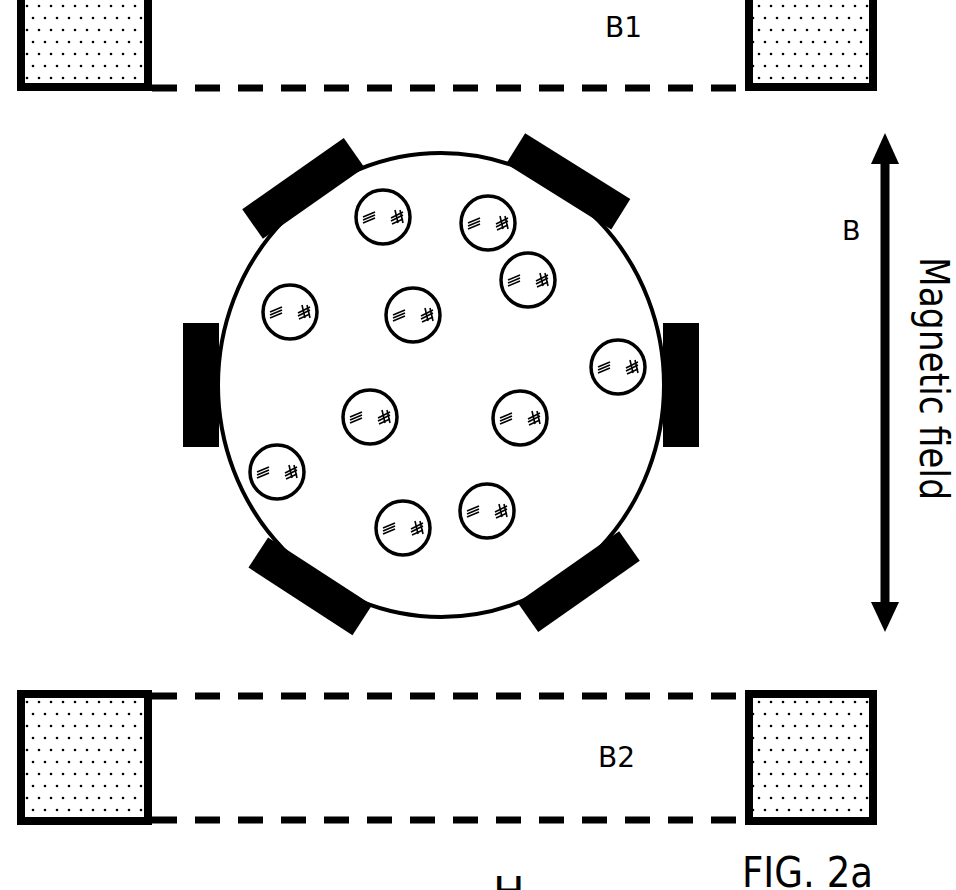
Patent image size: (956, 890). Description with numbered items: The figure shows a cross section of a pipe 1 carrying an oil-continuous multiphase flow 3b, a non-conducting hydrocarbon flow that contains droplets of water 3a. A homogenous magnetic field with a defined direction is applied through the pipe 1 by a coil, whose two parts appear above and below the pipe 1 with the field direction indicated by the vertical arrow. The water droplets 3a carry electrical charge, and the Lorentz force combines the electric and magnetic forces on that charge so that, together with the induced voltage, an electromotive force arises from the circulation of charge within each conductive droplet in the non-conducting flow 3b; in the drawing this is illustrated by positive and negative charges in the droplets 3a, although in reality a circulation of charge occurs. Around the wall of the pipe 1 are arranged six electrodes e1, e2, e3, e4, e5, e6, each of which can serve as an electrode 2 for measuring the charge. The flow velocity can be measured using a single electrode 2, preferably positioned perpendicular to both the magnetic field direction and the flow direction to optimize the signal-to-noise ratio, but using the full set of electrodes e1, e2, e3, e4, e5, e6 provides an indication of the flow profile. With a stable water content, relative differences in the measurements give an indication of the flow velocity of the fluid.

The pipe 1 is at (632, 513).
The electrode 2 is at (432, 396).
The water droplets 3a is at (528, 306).
The oil-continuous multiphase flow 3b is at (580, 283).
The electrode e1 is at (735, 385).
The electrode e2 is at (594, 611).
The electrode e3 is at (292, 622).
The electrode e4 is at (138, 386).
The electrode e5 is at (272, 170).
The electrode e6 is at (592, 157).